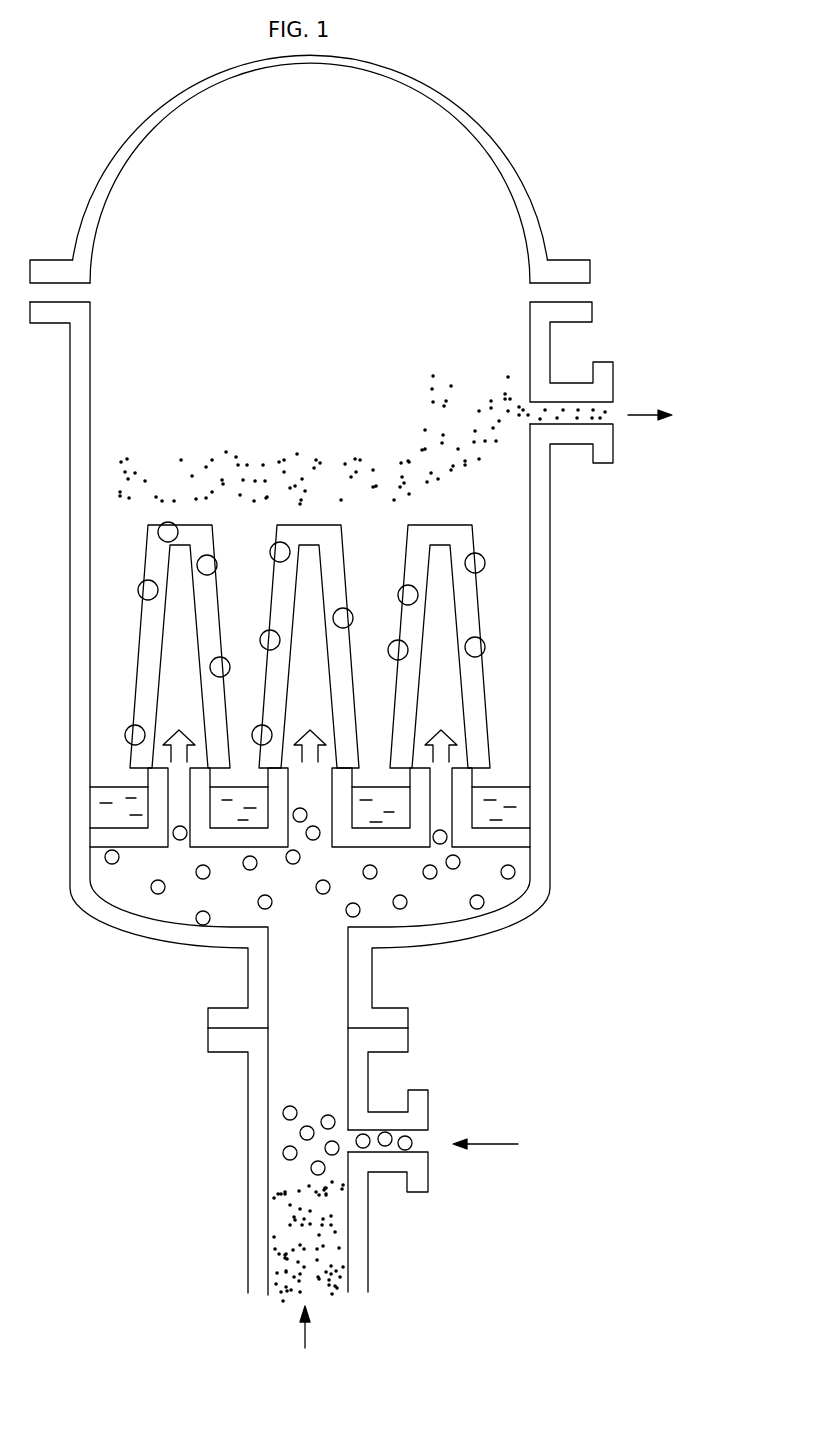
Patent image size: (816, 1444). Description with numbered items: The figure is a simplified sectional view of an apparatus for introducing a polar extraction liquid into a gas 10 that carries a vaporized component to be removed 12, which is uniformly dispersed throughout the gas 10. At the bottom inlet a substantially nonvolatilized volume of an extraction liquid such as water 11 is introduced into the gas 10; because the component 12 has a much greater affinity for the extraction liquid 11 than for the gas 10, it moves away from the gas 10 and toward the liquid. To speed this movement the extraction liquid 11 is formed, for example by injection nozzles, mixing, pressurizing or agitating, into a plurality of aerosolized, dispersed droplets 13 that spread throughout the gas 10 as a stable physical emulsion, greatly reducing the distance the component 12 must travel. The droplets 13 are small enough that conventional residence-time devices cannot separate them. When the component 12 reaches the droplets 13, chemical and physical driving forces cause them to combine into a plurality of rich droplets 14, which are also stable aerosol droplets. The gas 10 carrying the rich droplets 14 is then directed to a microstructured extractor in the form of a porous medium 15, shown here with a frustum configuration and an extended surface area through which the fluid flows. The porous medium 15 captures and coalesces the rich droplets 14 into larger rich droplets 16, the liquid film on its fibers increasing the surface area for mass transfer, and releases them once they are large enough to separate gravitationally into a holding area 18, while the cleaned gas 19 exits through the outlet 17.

The gas 10 is at (303, 1293).
The extraction liquid 11 is at (452, 1212).
The component to be removed 12 is at (308, 1242).
The aerosolized droplets 13 is at (312, 1113).
The rich droplets 14 is at (508, 892).
The porous medium 15 is at (483, 685).
The larger rich droplets 16 is at (485, 563).
The outlet 17 is at (622, 397).
The holding area 18 is at (527, 802).
The exiting gas 19 is at (507, 465).